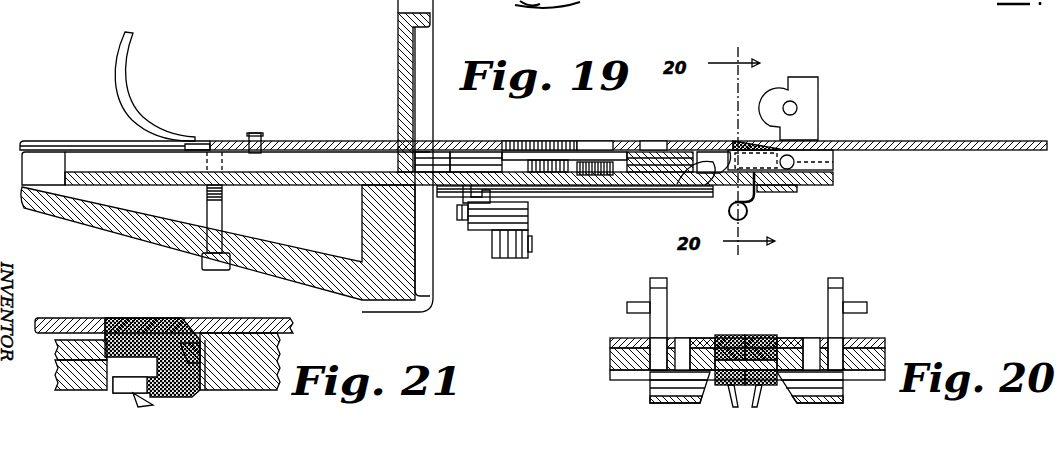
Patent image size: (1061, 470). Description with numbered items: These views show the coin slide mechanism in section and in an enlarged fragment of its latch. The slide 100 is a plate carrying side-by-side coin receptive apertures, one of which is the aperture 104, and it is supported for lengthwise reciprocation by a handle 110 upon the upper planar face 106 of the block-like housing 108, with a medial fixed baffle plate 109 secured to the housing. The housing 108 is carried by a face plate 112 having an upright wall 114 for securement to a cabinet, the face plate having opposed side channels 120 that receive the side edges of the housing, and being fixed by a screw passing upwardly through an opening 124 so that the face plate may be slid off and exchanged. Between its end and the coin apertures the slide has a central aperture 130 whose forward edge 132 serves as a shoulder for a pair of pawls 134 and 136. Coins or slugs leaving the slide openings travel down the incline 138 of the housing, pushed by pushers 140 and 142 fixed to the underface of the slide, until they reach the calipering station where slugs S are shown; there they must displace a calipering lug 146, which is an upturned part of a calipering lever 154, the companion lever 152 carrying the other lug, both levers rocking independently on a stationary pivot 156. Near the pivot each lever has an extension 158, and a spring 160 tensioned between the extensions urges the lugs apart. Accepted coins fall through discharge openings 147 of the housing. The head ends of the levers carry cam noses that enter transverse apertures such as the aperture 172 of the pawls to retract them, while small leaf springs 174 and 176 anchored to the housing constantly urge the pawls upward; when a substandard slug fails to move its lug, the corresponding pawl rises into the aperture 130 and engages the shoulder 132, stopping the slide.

In FIG. 19, the slide 100 is at (335, 141).
In FIG. 21, the slide 100 is at (50, 318).
In FIG. 20, the slide 100 is at (885, 340).
In FIG. 19, the coin receptive aperture 104 is at (615, 142).
In FIG. 19, the upper planar face 106 is at (186, 148).
In FIG. 19, the housing 108 is at (271, 172).
In FIG. 21, the housing 108 is at (58, 387).
In FIG. 20, the housing 108 is at (885, 350).
In FIG. 19, the medial fixed baffle plate 109 is at (590, 160).
In FIG. 19, the handle 110 is at (129, 64).
In FIG. 19, the face plate 112 is at (344, 292).
In FIG. 19, the upright wall 114 is at (400, 30).
In FIG. 19, the side channels 120 is at (113, 150).
In FIG. 19, the opening 124 is at (220, 216).
In FIG. 19, the central aperture 130 is at (780, 140).
In FIG. 21, the central aperture 130 is at (172, 323).
In FIG. 20, the central aperture 130 is at (783, 338).
In FIG. 19, the forward edge 132 is at (736, 143).
In FIG. 21, the forward edge 132 is at (105, 318).
In FIG. 20, the pawl 134 is at (733, 335).
In FIG. 19, the pawl 136 is at (742, 143).
In FIG. 21, the pawl 136 is at (138, 320).
In FIG. 20, the pawl 136 is at (762, 335).
In FIG. 19, the incline 138 is at (448, 155).
In FIG. 19, the pusher 140 is at (490, 160).
In FIG. 19, the pusher 142 is at (633, 158).
In FIG. 19, the calipering lug 146 is at (517, 143).
In FIG. 19, the discharge openings 147 is at (697, 174).
In FIG. 19, the calipering lever 152 is at (620, 190).
In FIG. 20, the calipering lever 152 is at (650, 398).
In FIG. 19, the calipering lever 154 is at (643, 197).
In FIG. 20, the calipering lever 154 is at (843, 398).
In FIG. 19, the stationary pivot 156 is at (497, 252).
In FIG. 19, the extension 158 is at (466, 195).
In FIG. 19, the spring 160 is at (467, 219).
In FIG. 21, the transverse aperture 172 is at (120, 362).
In FIG. 19, the leaf spring 174 is at (833, 165).
In FIG. 21, the leaf spring 174 is at (200, 388).
In FIG. 20, the leaf spring 174 is at (733, 398).
In FIG. 19, the leaf spring 176 is at (760, 192).
In FIG. 21, the leaf spring 176 is at (127, 403).
In FIG. 20, the leaf spring 176 is at (760, 398).
In FIG. 19, the slug S is at (597, 162).